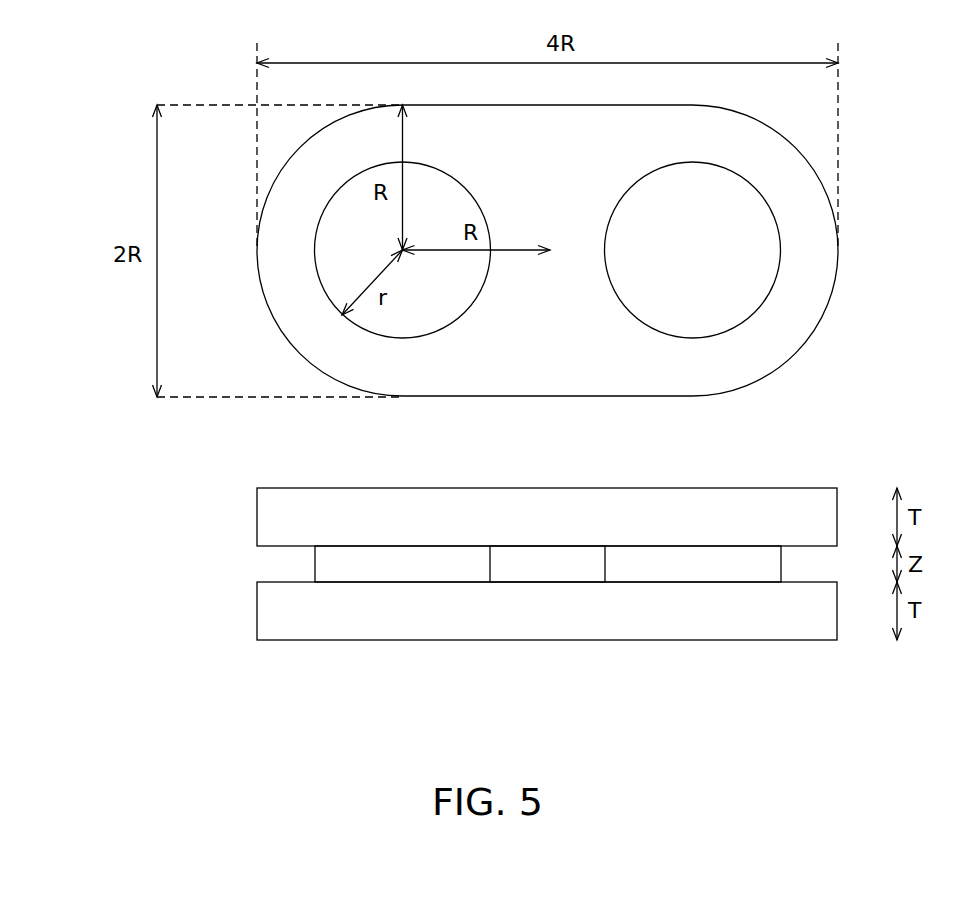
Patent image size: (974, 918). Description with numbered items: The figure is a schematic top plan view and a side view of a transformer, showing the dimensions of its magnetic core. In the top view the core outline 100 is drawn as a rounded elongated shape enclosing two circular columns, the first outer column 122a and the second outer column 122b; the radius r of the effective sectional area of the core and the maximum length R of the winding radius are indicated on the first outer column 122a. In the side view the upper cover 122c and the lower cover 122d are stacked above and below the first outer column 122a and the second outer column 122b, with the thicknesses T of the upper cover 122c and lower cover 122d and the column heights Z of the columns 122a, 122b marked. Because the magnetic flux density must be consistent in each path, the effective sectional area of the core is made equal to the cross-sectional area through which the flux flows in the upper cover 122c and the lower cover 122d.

The cutout opening / stadium-shaped aperture 100 is at (547, 250).
The first outer column 122a is at (443, 283).
The second outer column 122b is at (643, 283).
The upper cover 122c is at (547, 517).
The lower cover 122d is at (547, 611).